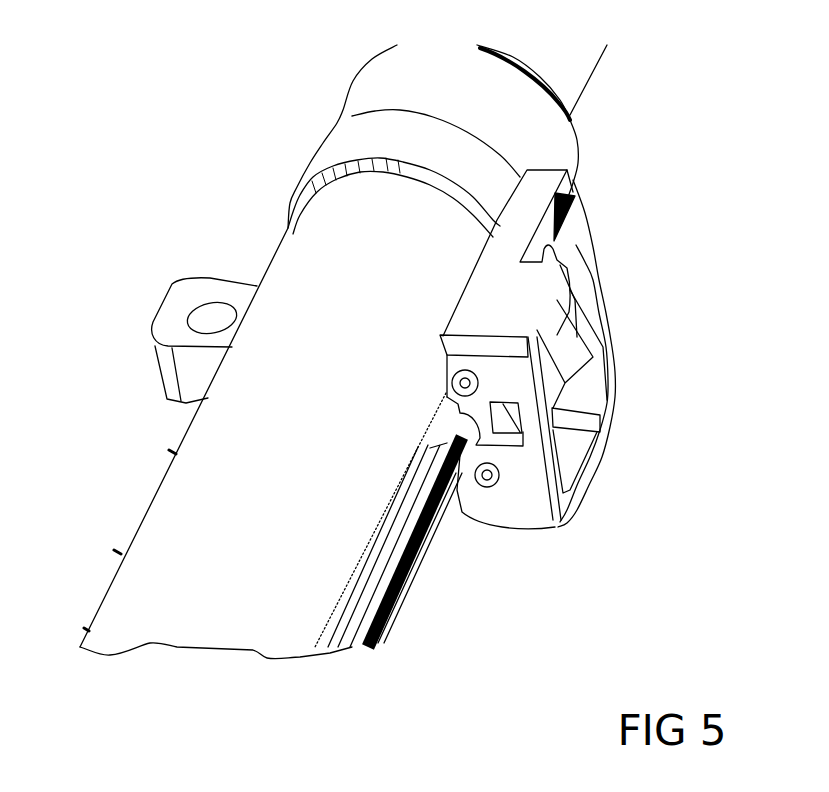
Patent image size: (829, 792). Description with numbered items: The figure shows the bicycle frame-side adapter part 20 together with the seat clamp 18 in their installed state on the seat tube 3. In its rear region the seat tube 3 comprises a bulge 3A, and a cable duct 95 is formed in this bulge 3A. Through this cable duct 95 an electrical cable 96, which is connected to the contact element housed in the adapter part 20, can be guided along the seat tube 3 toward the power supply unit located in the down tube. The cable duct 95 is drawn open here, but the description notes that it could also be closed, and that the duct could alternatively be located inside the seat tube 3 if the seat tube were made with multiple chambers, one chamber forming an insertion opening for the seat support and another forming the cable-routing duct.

The seat tube 3 is at (237, 482).
The bulge 3A is at (343, 527).
The seat clamp 18 is at (190, 232).
The adapter part 20 is at (617, 447).
The cable duct 95 is at (403, 527).
The electrical cable 96 is at (385, 617).